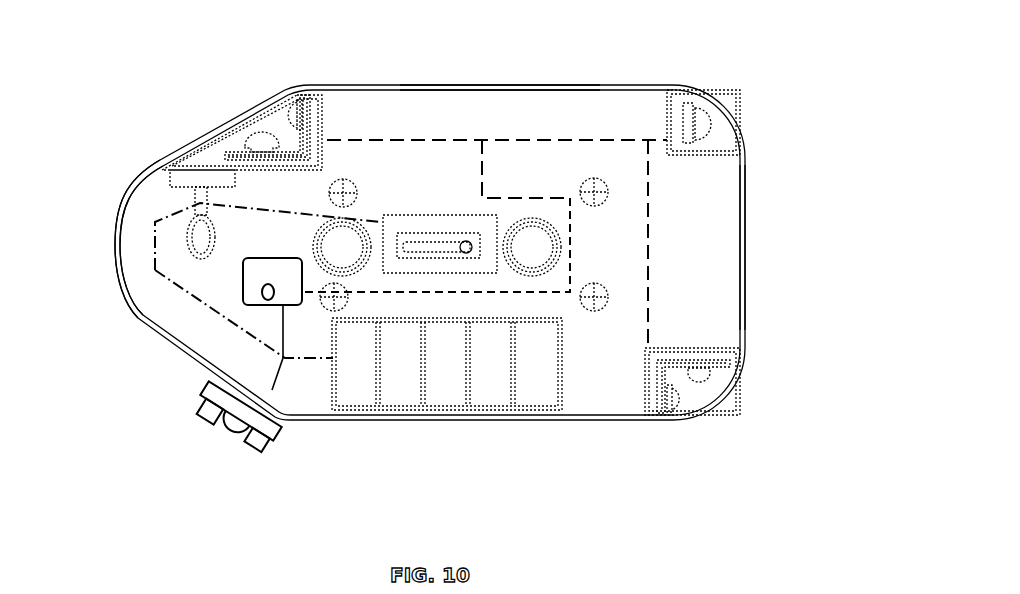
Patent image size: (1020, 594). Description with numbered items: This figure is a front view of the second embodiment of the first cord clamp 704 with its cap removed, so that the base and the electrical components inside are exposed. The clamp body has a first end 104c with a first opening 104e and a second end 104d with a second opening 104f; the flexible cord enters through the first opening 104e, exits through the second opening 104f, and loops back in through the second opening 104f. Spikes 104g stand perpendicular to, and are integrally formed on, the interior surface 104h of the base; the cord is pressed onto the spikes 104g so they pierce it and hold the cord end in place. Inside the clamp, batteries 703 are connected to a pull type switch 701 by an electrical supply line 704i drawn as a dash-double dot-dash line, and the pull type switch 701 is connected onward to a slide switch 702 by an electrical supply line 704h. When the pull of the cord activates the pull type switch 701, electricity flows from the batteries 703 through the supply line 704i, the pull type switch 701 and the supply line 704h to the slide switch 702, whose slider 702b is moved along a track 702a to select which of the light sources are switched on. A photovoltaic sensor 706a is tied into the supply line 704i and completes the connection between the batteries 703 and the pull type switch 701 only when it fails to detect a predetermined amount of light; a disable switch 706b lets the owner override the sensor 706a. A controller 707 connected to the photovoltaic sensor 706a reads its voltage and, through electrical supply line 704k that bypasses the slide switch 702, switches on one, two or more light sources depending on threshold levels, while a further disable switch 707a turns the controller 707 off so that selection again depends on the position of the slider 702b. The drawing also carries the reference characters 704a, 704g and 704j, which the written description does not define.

The first cord clamp 704 is at (196, 95).
The top wall of housing 704a is at (540, 85).
The partition 704g is at (438, 138).
The electrical supply line 704h is at (362, 216).
The electrical supply line 704i is at (153, 263).
The connector bar 704j is at (273, 399).
The electrical supply line 704k is at (567, 294).
The pull type switch 701 is at (184, 176).
The slide switch 702 is at (443, 266).
The track 702a is at (410, 252).
The slider 702b is at (477, 252).
The batteries 703 is at (397, 376).
The photovoltaic sensor 706a is at (243, 441).
The disable switch 706b is at (204, 421).
The controller 707 is at (239, 287).
The disable switch 707a is at (260, 294).
The first end 104c is at (122, 306).
The second end 104d is at (747, 190).
The first opening 104e is at (113, 238).
The second opening 104f is at (747, 262).
The spikes 104g is at (608, 200).
The interior surface of the base 104h is at (537, 183).